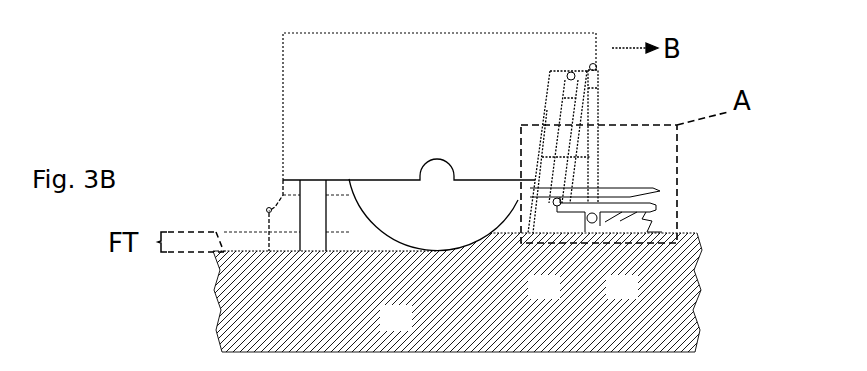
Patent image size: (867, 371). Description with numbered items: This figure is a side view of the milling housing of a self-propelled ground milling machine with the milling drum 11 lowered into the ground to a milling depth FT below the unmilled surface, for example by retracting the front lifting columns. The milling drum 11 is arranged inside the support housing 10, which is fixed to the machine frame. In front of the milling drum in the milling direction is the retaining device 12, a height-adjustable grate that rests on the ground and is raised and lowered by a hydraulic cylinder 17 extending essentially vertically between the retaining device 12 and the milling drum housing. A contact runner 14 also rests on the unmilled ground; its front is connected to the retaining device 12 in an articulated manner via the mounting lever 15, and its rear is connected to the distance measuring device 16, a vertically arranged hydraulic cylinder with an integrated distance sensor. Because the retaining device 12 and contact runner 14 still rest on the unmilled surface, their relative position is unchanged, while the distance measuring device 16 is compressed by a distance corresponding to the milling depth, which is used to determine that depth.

The support housing 10 is at (290, 50).
The milling drum 11 is at (432, 225).
The retaining device 12 is at (556, 218).
The contact runner 14 is at (643, 223).
The mounting lever 15 is at (612, 208).
The distance measuring device 16 is at (590, 115).
The hydraulic cylinder 17 is at (565, 117).